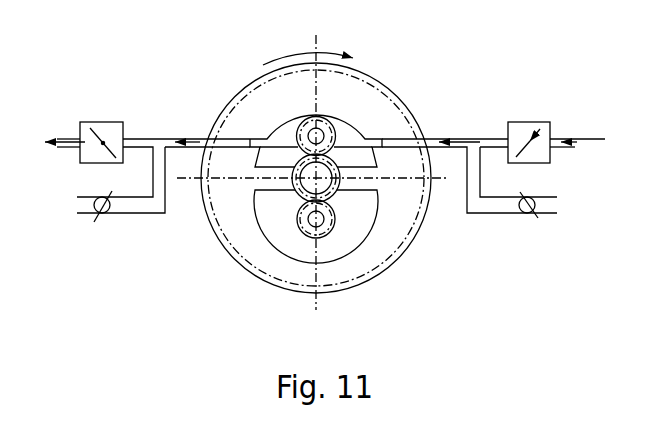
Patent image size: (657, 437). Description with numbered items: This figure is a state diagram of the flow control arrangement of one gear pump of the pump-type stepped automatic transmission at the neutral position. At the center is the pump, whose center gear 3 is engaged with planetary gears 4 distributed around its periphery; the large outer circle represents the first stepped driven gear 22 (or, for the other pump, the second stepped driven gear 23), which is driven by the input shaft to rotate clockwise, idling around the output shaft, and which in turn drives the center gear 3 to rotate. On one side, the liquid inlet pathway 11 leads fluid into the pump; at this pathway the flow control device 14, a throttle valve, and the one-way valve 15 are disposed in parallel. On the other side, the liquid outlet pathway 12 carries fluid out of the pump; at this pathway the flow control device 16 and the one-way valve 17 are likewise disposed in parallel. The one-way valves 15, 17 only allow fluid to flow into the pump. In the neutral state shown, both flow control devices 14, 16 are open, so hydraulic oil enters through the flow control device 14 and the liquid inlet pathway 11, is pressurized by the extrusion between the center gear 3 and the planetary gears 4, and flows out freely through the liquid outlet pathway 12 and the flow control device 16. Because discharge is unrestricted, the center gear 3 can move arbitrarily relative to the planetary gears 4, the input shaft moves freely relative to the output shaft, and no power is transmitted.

The center gear 3 is at (299, 192).
The planetary gear 4 is at (335, 129).
The liquid inlet pathway 11 is at (459, 137).
The liquid outlet pathway 12 is at (198, 134).
The flow control device 14 is at (536, 122).
The one-way valve 15 is at (531, 213).
The flow control device 16 is at (108, 130).
The one-way valve 17 is at (104, 213).
The first stepped driven gear 22 is at (329, 165).
The second stepped driven gear 23 is at (358, 92).